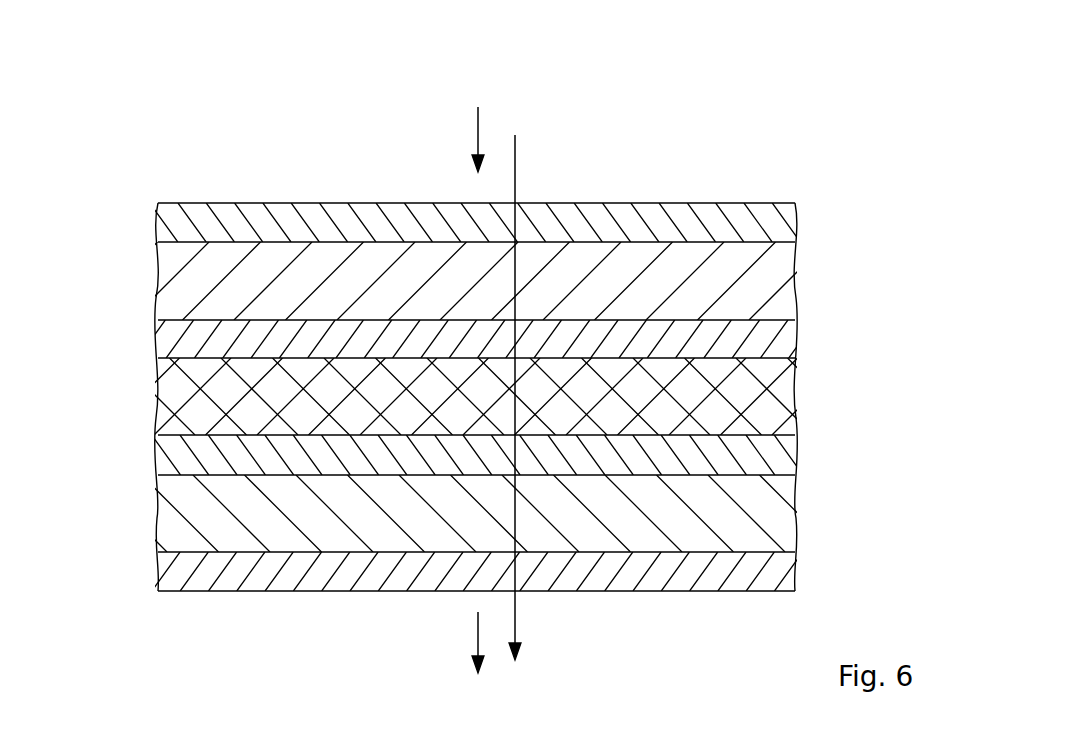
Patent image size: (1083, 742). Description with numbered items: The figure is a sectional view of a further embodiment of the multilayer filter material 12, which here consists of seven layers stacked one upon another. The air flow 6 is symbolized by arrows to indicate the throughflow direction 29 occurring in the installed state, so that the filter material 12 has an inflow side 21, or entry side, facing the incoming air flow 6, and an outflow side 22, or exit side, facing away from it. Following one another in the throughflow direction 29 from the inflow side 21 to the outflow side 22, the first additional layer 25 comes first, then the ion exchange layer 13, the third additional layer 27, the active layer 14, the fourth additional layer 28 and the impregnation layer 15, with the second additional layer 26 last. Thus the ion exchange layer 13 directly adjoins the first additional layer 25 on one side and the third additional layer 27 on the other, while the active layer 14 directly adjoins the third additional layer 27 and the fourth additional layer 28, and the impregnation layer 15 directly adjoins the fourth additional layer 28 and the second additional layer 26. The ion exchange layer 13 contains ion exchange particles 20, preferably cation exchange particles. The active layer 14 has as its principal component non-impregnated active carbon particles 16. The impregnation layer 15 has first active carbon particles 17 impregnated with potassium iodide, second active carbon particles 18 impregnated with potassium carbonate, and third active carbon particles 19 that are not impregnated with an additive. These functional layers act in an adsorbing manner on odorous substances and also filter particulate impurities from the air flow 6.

The air flow 6 is at (478, 130).
The filter material 12 is at (829, 175).
The ion exchange layer 13 is at (143, 276).
The active layer 14 is at (143, 395).
The impregnation layer 15 is at (143, 513).
The non-impregnated active carbon particles 16 is at (743, 393).
The first active carbon particles 17 is at (237, 540).
The second active carbon particles 18 is at (292, 540).
The third active carbon particles 19 is at (340, 540).
The ion exchange particles 20 is at (282, 255).
The inflow side 21 is at (657, 200).
The outflow side 22 is at (617, 592).
The first additional layer 25 is at (143, 221).
The second additional layer 26 is at (143, 571).
The third additional layer 27 is at (143, 337).
The fourth additional layer 28 is at (143, 452).
The throughflow direction 29 is at (515, 158).